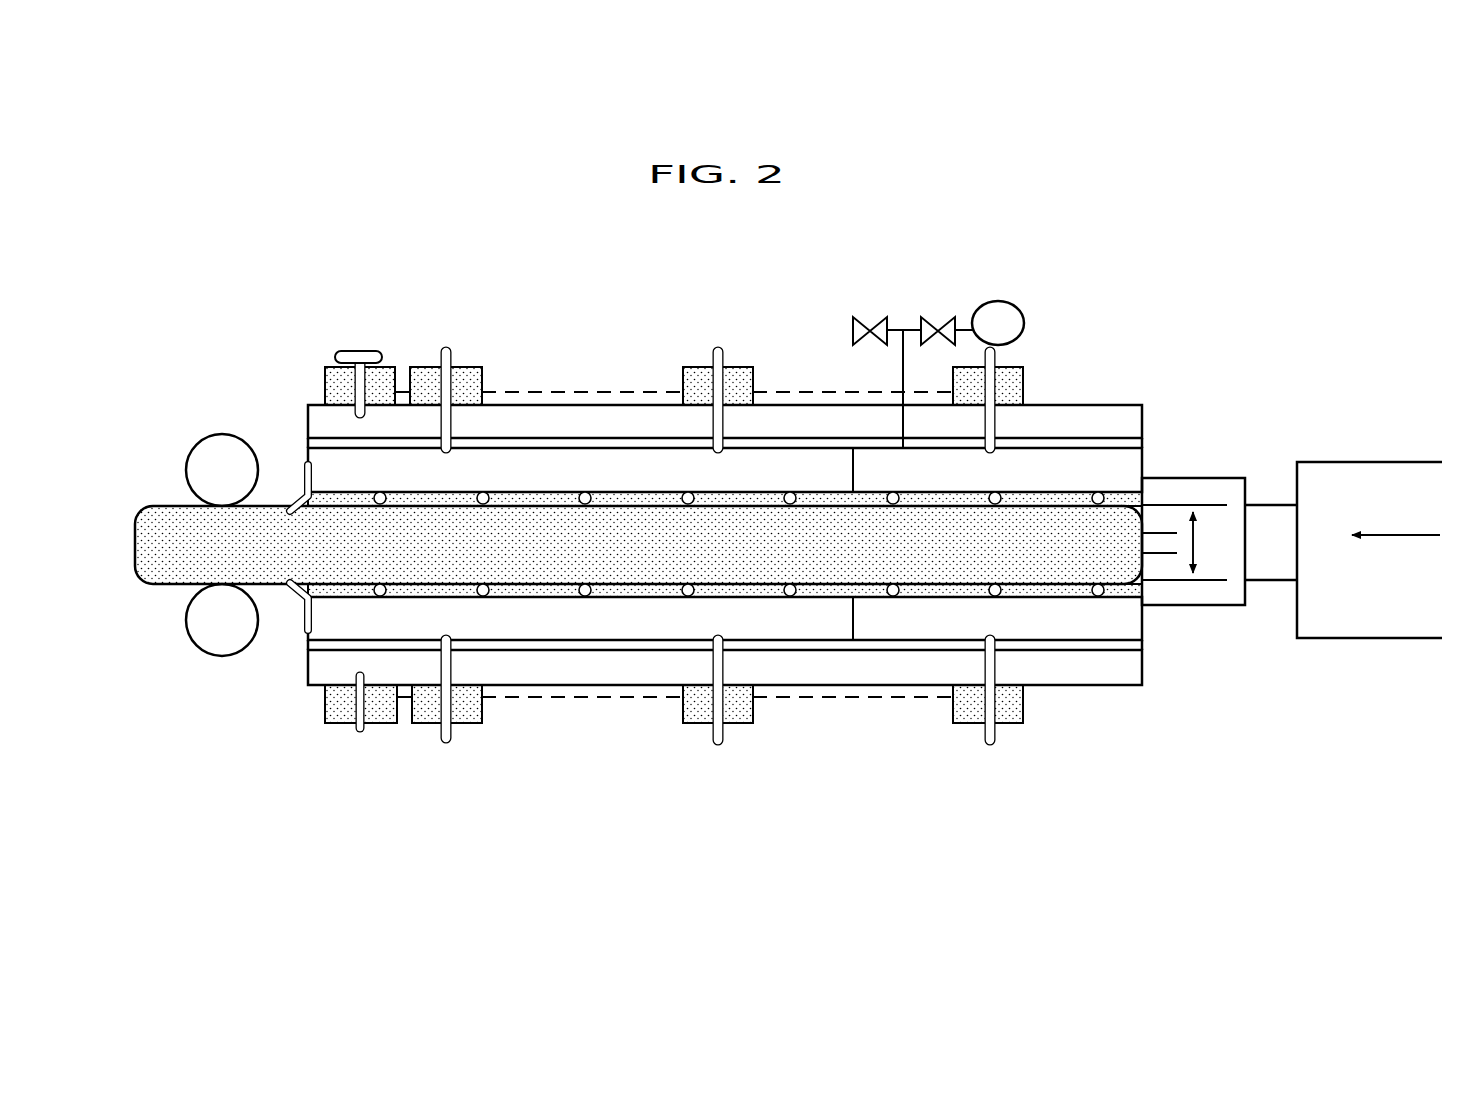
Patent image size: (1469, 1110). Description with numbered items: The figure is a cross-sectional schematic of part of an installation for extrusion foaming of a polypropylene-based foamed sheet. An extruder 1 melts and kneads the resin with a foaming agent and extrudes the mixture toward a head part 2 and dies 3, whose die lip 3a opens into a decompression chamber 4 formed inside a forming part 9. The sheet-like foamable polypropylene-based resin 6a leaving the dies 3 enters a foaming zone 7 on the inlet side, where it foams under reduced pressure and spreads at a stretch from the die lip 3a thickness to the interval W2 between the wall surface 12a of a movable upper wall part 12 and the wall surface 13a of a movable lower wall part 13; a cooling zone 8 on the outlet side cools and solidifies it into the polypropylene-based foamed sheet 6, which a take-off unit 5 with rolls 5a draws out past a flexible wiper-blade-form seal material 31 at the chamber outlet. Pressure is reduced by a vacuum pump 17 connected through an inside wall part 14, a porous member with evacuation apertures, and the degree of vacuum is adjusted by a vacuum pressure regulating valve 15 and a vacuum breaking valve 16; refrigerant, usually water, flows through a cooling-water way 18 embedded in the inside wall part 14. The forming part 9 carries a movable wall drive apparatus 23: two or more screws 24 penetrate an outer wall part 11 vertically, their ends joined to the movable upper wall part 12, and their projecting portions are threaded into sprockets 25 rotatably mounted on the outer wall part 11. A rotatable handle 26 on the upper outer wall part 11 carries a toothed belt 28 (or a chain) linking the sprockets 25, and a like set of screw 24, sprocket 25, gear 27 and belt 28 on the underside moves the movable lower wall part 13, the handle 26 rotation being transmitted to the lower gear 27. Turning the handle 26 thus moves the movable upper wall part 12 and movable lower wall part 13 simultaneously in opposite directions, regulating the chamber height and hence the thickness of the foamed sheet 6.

The extruder 1 is at (1348, 480).
The head part 2 is at (1258, 513).
The dies 3 is at (1198, 478).
The die lip 3a is at (1157, 533).
The decompression chamber 4 is at (1044, 492).
The take-off unit 5 is at (201, 406).
The roll 5a is at (204, 463).
The polypropylene-based foamed sheet 6 is at (168, 582).
The sheet-like foamable polypropylene-based resin 6a is at (1108, 558).
The foaming zone 7 is at (1057, 592).
The cooling zone 8 is at (547, 597).
The forming part 9 is at (1097, 384).
The outer wall part 11 is at (1093, 425).
The movable upper wall part 12 is at (1108, 463).
The wall surface 12a is at (558, 502).
The movable lower wall part 13 is at (1125, 625).
The wall surface 13a is at (630, 566).
The inside wall part 14 is at (613, 493).
The vacuum pressure regulating valve 15 is at (938, 316).
The vacuum breaking valve 16 is at (870, 316).
The vacuum pump 17 is at (990, 302).
The cooling-water way 18 is at (892, 492).
The movable wall drive apparatus 23 is at (323, 338).
The screw 24 is at (446, 350).
The sprocket 25 is at (463, 370).
The handle 26 is at (359, 352).
The gear 27 is at (377, 377).
The belt 28 is at (645, 390).
The seal material 31 is at (292, 496).